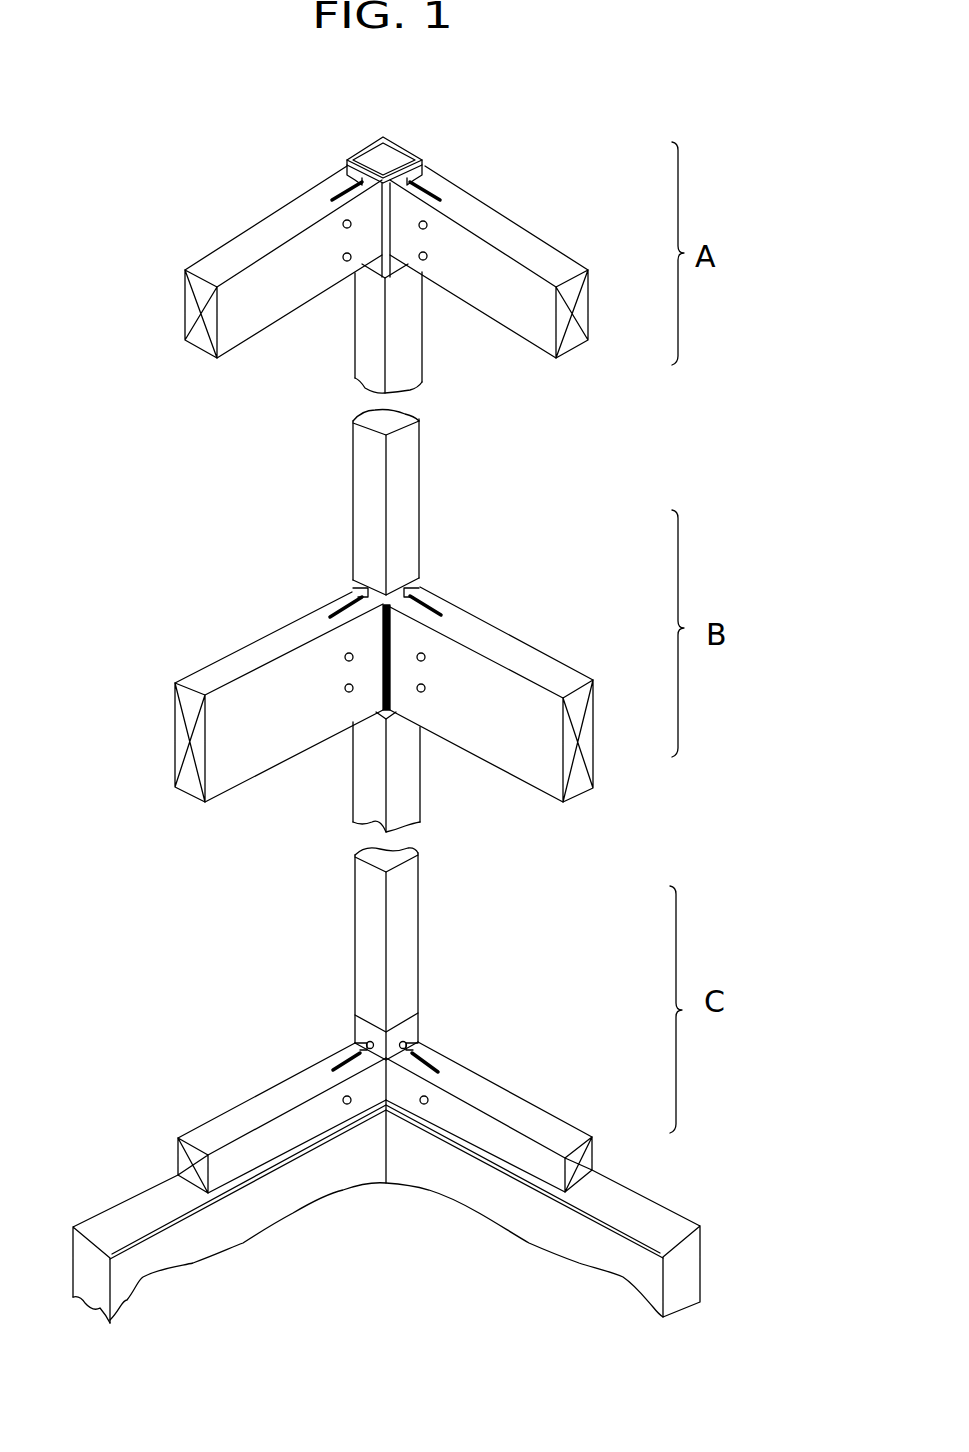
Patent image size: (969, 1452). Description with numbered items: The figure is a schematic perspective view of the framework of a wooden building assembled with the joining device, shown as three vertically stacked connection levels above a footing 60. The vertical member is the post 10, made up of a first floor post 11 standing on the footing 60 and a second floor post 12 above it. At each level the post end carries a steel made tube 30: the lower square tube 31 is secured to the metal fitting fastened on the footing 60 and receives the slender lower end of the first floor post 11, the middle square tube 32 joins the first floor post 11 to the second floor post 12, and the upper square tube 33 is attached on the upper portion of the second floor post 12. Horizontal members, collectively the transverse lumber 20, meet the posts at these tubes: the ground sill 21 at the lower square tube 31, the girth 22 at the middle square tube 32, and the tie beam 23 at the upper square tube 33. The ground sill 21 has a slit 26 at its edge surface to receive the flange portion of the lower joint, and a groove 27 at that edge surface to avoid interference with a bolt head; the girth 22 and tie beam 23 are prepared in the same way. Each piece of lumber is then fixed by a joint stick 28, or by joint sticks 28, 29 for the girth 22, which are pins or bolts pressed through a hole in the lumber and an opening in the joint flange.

The post 10 is at (450, 723).
The first floor post 11 is at (407, 909).
The second floor post 12 is at (404, 455).
The transverse lumber 20 is at (414, 670).
The ground sill 21 is at (508, 1107).
The girth 22 is at (523, 661).
The tie beam 23 is at (503, 233).
The slit 26 is at (332, 198).
The groove 27 is at (345, 168).
The joint stick 28 is at (343, 262).
The joint stick 29 is at (343, 222).
The steel made tube 30 is at (355, 577).
The lower square tube 31 is at (356, 1033).
The middle square tube 32 is at (363, 587).
The upper square tube 33 is at (403, 147).
The footing 60 is at (685, 1266).